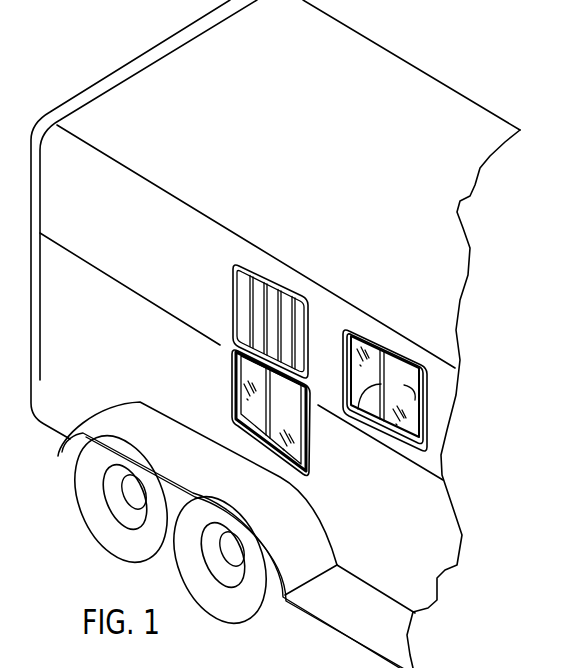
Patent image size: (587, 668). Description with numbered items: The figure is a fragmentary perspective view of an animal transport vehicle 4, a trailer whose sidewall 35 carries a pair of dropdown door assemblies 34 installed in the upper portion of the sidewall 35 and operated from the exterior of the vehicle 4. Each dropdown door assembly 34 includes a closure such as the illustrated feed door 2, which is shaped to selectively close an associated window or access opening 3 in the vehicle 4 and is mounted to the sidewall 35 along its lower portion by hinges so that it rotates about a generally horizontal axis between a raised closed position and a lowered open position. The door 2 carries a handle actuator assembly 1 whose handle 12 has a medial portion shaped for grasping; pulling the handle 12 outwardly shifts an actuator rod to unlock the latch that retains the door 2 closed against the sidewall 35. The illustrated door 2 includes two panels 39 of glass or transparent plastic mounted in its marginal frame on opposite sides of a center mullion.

The handle actuator assembly 1 is at (430, 365).
The feed door 2 is at (215, 393).
The access opening 3 is at (246, 312).
The vehicle 4 is at (466, 88).
The handle 12 is at (378, 392).
The dropdown door assembly 34 is at (160, 345).
The sidewall 35 is at (443, 540).
The panels 39 is at (420, 402).